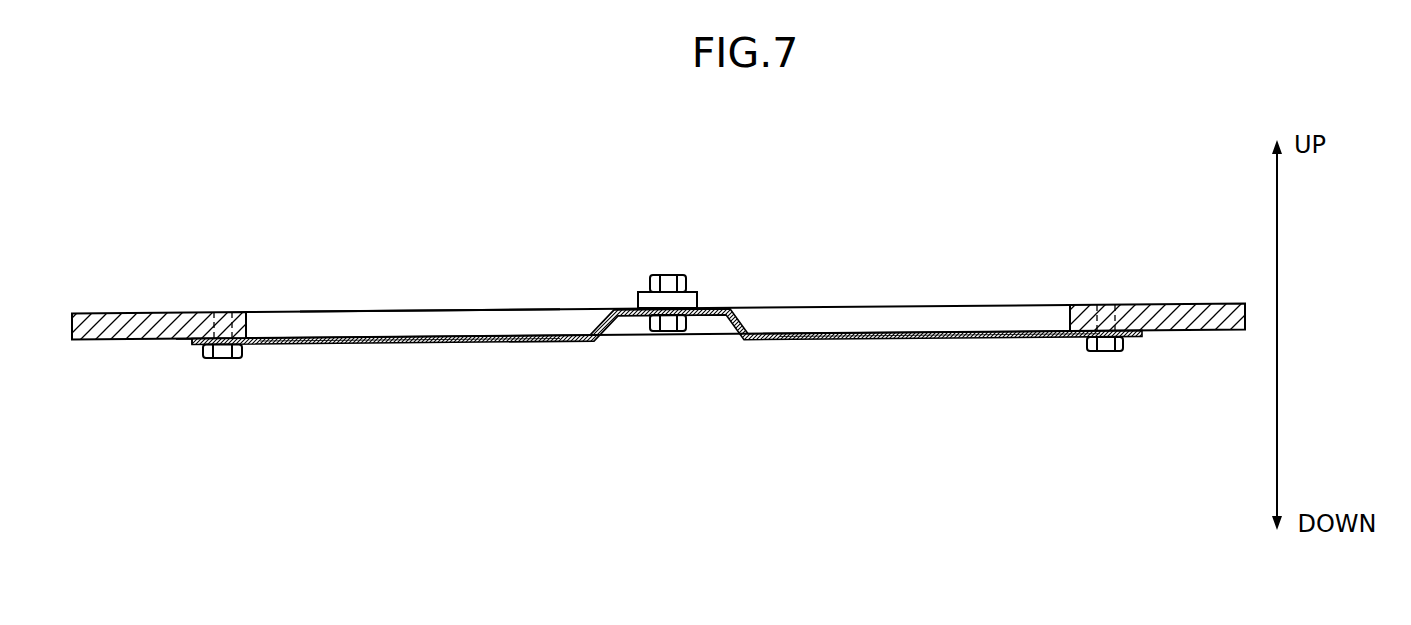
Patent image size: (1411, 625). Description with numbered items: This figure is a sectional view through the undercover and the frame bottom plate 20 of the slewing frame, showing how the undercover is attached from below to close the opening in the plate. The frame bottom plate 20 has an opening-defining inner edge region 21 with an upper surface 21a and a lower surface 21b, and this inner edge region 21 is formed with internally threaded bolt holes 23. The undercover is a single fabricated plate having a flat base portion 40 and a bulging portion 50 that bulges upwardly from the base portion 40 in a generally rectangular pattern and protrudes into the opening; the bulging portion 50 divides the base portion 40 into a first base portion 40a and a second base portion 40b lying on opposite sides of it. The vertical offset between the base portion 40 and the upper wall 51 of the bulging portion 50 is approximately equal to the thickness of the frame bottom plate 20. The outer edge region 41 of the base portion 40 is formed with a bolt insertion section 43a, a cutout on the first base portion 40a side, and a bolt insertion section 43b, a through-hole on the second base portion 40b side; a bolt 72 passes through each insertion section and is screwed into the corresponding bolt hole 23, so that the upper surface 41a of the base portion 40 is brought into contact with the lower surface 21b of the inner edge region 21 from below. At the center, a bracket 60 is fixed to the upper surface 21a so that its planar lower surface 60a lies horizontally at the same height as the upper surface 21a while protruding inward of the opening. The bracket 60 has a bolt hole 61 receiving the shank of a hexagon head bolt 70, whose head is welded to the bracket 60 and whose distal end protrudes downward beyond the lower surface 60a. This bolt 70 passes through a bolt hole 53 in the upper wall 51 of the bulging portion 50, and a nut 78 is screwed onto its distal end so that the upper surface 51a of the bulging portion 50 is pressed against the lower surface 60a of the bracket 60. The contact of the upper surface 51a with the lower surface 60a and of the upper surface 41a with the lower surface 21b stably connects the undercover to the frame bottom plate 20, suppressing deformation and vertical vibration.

The frame bottom plate 20 is at (875, 305).
The inner edge region 21 is at (158, 312).
The upper surface 21a is at (410, 308).
The lower surface 21b is at (288, 312).
The bolt hole 23 is at (224, 312).
The base portion 40 is at (667, 384).
The first base portion 40a is at (378, 344).
The second base portion 40b is at (928, 337).
The outer edge region 41 is at (197, 342).
The upper surface 41a is at (177, 338).
The bolt insertion section 43a is at (250, 348).
The bolt insertion section 43b is at (1083, 338).
The bulging portion 50 is at (613, 325).
The upper wall 51 is at (718, 333).
The upper surface 51a is at (717, 307).
The bolt hole 53 is at (636, 331).
The bracket 60 is at (693, 297).
The lower surface 60a is at (623, 307).
The bolt hole 61 is at (680, 303).
The bolt 70 is at (668, 280).
The bolt 72 is at (220, 356).
The nut 78 is at (668, 333).